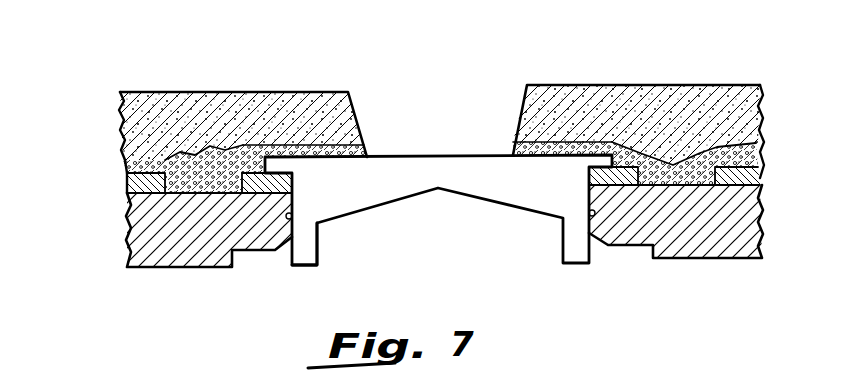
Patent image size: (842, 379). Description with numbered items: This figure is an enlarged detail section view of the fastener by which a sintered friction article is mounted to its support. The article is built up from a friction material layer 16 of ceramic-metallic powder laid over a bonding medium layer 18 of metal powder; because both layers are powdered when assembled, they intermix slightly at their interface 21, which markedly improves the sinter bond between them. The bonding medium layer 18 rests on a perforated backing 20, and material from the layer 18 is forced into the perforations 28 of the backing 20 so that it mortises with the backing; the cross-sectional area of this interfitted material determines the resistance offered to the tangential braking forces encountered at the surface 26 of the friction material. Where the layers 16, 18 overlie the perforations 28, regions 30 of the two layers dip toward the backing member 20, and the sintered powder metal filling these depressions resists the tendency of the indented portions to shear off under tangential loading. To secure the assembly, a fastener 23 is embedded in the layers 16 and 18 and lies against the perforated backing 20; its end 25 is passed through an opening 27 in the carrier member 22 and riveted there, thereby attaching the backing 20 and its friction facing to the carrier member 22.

The friction material layer 16 is at (273, 103).
The bonding medium layer 18 is at (123, 163).
The perforated backing 20 is at (124, 192).
The interface 21 is at (733, 143).
The carrier member 22 is at (185, 247).
The fastener 23 is at (411, 170).
The end of the fastener 25 is at (305, 270).
The surface 26 is at (560, 83).
The opening 27 is at (290, 218).
The perforations 28 is at (422, 260).
The regions 30 is at (200, 167).